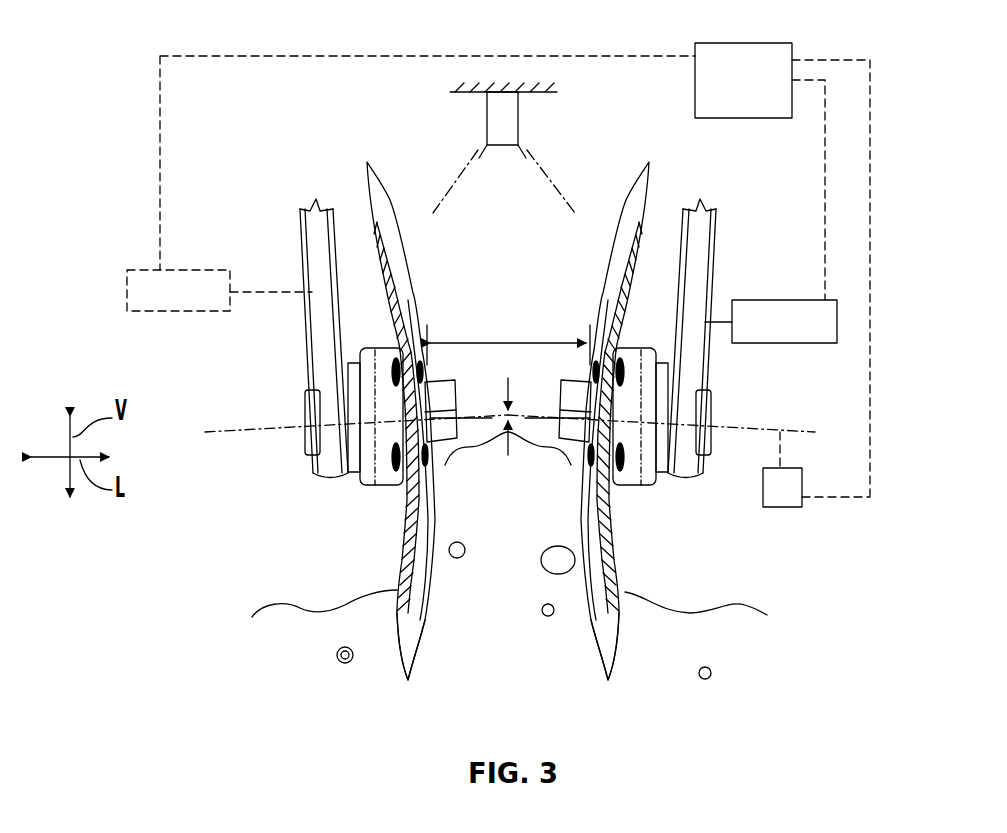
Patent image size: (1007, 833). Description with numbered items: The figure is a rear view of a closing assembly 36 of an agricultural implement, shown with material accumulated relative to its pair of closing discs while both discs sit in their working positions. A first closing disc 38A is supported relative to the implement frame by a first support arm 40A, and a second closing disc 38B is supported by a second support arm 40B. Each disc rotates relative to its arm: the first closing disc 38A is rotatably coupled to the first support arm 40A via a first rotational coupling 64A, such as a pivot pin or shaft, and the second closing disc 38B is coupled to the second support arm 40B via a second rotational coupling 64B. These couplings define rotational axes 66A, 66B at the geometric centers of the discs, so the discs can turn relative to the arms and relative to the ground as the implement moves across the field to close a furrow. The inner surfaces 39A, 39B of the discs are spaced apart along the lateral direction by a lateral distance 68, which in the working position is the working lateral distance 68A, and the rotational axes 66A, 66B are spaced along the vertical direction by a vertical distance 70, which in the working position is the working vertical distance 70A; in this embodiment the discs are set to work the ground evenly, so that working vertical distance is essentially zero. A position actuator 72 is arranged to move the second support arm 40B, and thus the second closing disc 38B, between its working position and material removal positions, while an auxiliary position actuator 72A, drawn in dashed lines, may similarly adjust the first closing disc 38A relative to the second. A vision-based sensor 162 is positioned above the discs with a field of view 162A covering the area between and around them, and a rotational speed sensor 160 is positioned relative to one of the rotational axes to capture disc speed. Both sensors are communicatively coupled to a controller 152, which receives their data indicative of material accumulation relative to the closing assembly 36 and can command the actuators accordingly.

The closing assembly 36 is at (310, 158).
The first closing disc 38A is at (429, 589).
The second closing disc 38B is at (594, 612).
The inner surface of first closing disc 39A is at (398, 257).
The inner surface of second closing disc 39B is at (625, 252).
The first support arm 40A is at (305, 255).
The second support arm 40B is at (700, 278).
The first rotational coupling 64A is at (445, 430).
The second rotational coupling 64B is at (580, 430).
The rotational axis of first closing disc 66A is at (268, 427).
The rotational axis of second closing disc 66B is at (742, 422).
The lateral distance 68 is at (504, 312).
The working lateral distance 68A is at (485, 343).
The vertical distance 70 is at (544, 362).
The working vertical distance 70A is at (510, 415).
The position actuator 72 is at (807, 300).
The auxiliary position actuator 72A is at (139, 268).
The controller 152 is at (745, 43).
The rotational speed sensor 160 is at (780, 507).
The vision-based sensor 162 is at (487, 125).
The field of view 162A is at (415, 160).